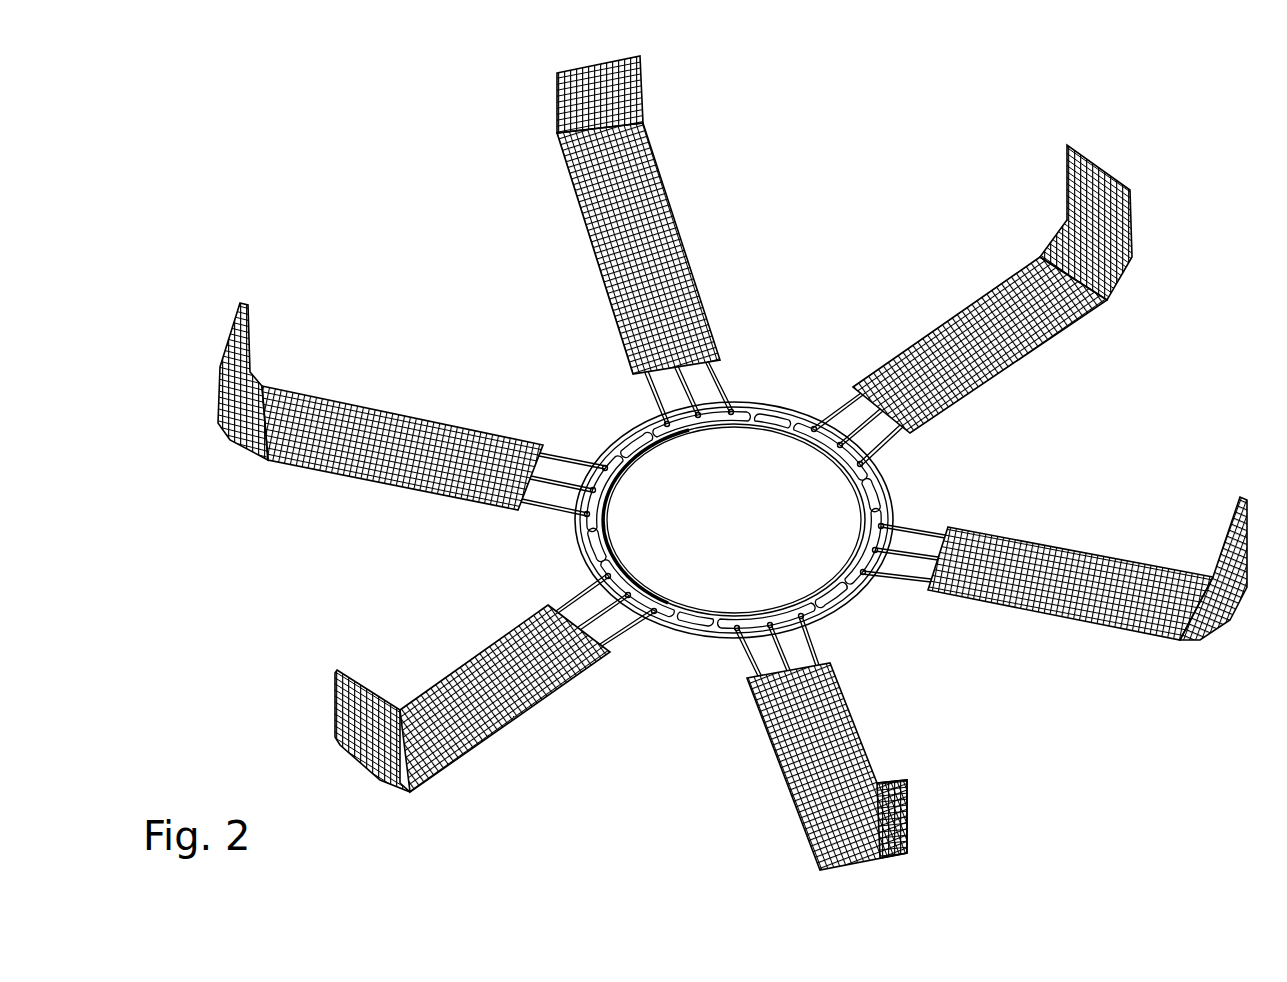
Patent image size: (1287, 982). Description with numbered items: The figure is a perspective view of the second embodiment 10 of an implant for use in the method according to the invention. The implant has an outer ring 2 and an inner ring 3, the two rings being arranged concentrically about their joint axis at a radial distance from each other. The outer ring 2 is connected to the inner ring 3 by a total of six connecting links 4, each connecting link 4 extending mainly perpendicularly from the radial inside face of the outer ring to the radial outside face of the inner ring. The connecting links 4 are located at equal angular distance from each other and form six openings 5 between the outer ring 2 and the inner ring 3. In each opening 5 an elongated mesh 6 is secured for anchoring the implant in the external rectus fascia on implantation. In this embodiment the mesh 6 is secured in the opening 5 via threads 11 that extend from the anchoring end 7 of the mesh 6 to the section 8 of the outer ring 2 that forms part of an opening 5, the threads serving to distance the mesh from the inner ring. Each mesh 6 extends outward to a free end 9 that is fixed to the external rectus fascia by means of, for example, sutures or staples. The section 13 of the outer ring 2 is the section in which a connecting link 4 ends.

The embodiment 10 is at (862, 220).
The outer ring 2 is at (781, 406).
The inner ring 3 is at (615, 543).
The threads 11 is at (580, 458).
The connecting link 4 is at (692, 626).
The section 8 is at (892, 503).
The opening 5 is at (833, 607).
The section 13 is at (745, 639).
The free end 9 is at (248, 304).
The mesh 6 is at (350, 404).
The anchoring end 7 is at (915, 436).